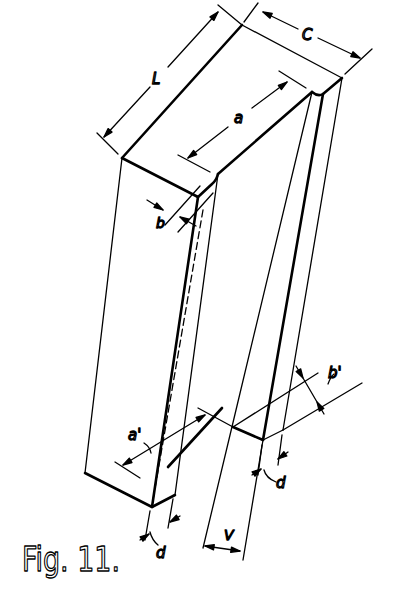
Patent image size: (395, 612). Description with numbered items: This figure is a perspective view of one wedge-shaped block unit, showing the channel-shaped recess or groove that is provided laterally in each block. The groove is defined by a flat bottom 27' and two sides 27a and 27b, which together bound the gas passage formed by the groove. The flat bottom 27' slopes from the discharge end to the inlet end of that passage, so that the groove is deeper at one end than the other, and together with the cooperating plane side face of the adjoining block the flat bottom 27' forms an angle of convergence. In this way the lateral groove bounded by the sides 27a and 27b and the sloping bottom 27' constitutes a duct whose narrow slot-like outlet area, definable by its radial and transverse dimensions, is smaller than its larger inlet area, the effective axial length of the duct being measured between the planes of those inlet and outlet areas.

The side 27a is at (148, 505).
The flat bottom 27' is at (240, 320).
The side 27b is at (248, 430).